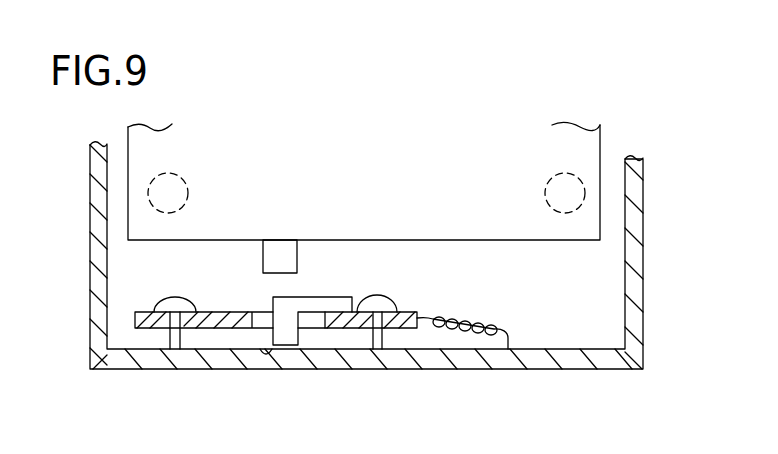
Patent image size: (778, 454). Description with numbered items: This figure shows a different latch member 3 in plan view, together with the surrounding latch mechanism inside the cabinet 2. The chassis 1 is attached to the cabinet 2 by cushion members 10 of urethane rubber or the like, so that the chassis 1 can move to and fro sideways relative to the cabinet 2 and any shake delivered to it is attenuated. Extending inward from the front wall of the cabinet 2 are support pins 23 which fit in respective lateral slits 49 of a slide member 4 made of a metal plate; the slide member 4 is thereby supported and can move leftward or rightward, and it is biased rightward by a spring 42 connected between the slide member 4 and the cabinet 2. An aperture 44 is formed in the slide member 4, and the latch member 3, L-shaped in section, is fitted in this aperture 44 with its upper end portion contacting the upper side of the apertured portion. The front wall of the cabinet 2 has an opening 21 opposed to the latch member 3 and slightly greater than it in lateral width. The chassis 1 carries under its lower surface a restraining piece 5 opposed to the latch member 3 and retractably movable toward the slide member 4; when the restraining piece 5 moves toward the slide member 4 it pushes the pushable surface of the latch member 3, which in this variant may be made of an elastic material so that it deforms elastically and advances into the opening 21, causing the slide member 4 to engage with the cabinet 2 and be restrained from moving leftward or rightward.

The chassis 1 is at (590, 152).
The cabinet 2 is at (643, 263).
The latch member 3 is at (287, 333).
The slide member 4 is at (222, 318).
The restraining piece 5 is at (297, 260).
The cushion members 10 is at (180, 176).
The opening 21 is at (267, 355).
The support pins 23 is at (170, 337).
The spring 42 is at (489, 320).
The aperture 44 is at (318, 322).
The lateral slits 49 is at (170, 300).